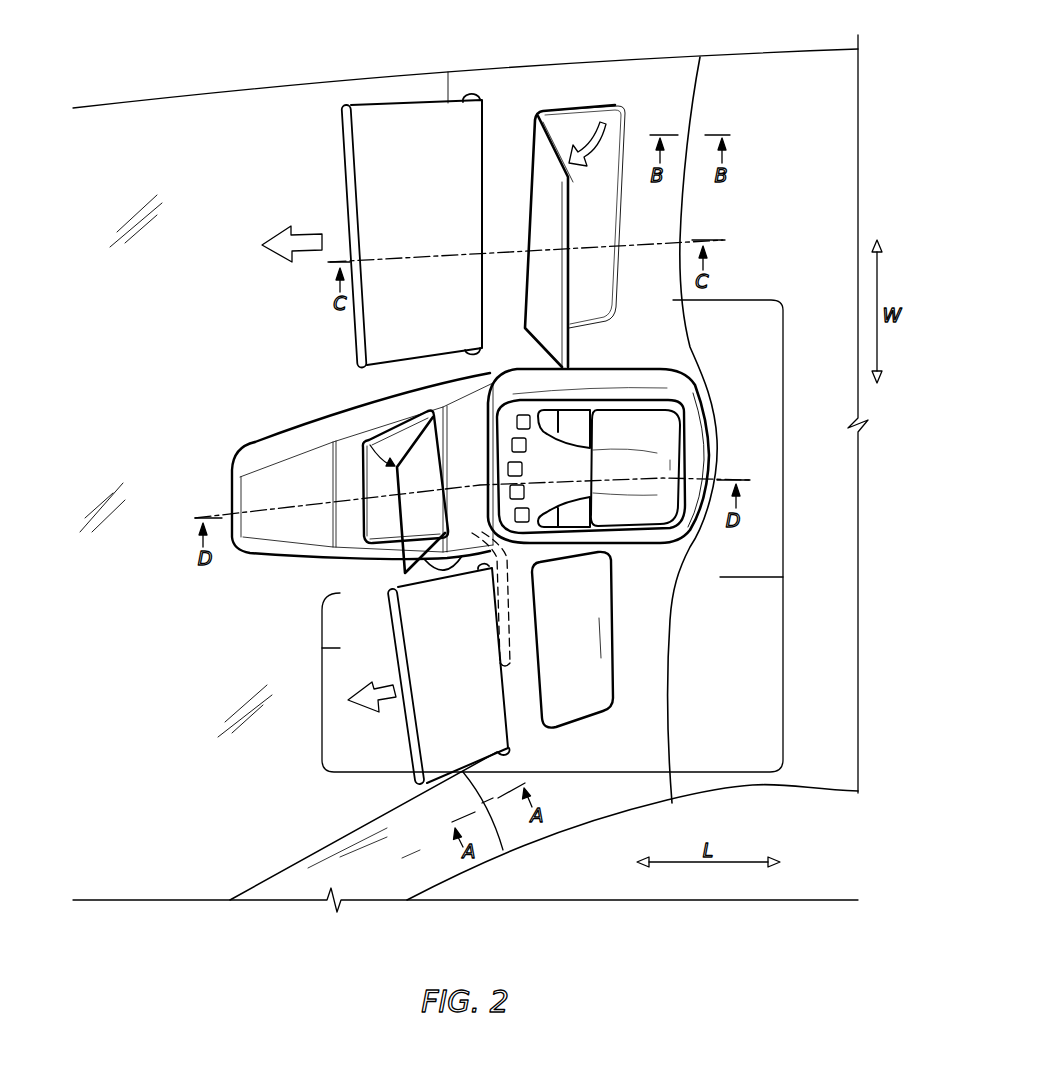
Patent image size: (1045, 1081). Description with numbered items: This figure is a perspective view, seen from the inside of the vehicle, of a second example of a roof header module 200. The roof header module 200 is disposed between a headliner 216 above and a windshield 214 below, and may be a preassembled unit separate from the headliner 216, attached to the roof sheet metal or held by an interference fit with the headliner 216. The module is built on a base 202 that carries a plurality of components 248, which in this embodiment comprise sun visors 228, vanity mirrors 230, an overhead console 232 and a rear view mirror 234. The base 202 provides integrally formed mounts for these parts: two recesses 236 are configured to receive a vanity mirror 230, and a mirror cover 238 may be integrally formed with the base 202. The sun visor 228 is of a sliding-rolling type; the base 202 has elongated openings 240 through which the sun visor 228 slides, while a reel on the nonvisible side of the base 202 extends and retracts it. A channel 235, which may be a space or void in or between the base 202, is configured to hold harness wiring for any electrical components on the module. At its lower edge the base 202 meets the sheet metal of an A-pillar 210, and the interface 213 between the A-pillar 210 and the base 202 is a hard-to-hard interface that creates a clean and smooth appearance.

The roof header module 200 is at (483, 63).
The base 202 is at (613, 78).
The A-pillar 210 is at (430, 868).
The interface 213 is at (498, 827).
The windshield 214 is at (233, 102).
The headliner 216 is at (757, 73).
The sun visor 228 is at (390, 123).
The vanity mirror 230 is at (598, 293).
The overhead console 232 is at (657, 505).
The rear view mirror 234 is at (382, 528).
The channel 235 is at (510, 668).
The recess 236 is at (583, 108).
The mirror cover 238 is at (538, 200).
The elongated opening 240 is at (470, 98).
The plurality of components 248 is at (783, 532).